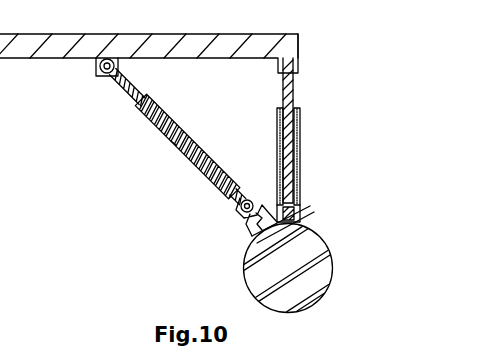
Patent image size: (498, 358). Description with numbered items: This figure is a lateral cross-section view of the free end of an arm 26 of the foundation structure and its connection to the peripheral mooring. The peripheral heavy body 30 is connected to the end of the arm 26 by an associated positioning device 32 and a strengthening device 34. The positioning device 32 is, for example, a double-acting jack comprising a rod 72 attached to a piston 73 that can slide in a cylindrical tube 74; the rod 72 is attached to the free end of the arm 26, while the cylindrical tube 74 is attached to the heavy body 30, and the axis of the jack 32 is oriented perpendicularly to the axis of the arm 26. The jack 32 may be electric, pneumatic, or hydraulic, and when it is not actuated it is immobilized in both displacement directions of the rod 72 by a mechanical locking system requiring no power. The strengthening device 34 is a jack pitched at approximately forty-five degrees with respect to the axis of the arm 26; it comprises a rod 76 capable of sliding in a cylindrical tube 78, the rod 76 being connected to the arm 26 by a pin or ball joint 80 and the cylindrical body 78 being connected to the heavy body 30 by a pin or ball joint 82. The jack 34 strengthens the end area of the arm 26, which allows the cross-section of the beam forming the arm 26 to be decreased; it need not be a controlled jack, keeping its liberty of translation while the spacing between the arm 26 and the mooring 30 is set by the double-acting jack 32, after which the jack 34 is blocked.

The arm 26 is at (184, 45).
The pin or ball joint 80 is at (96, 65).
The rod 76 is at (132, 100).
The cylindrical tube 78 is at (190, 130).
The strengthening device 34 is at (175, 149).
The pin or ball joint 82 is at (243, 213).
The rod 72 is at (296, 95).
The positioning device 32 is at (300, 137).
The piston 73 is at (298, 160).
The cylindrical tube 74 is at (300, 182).
The peripheral heavy body 30 is at (325, 238).